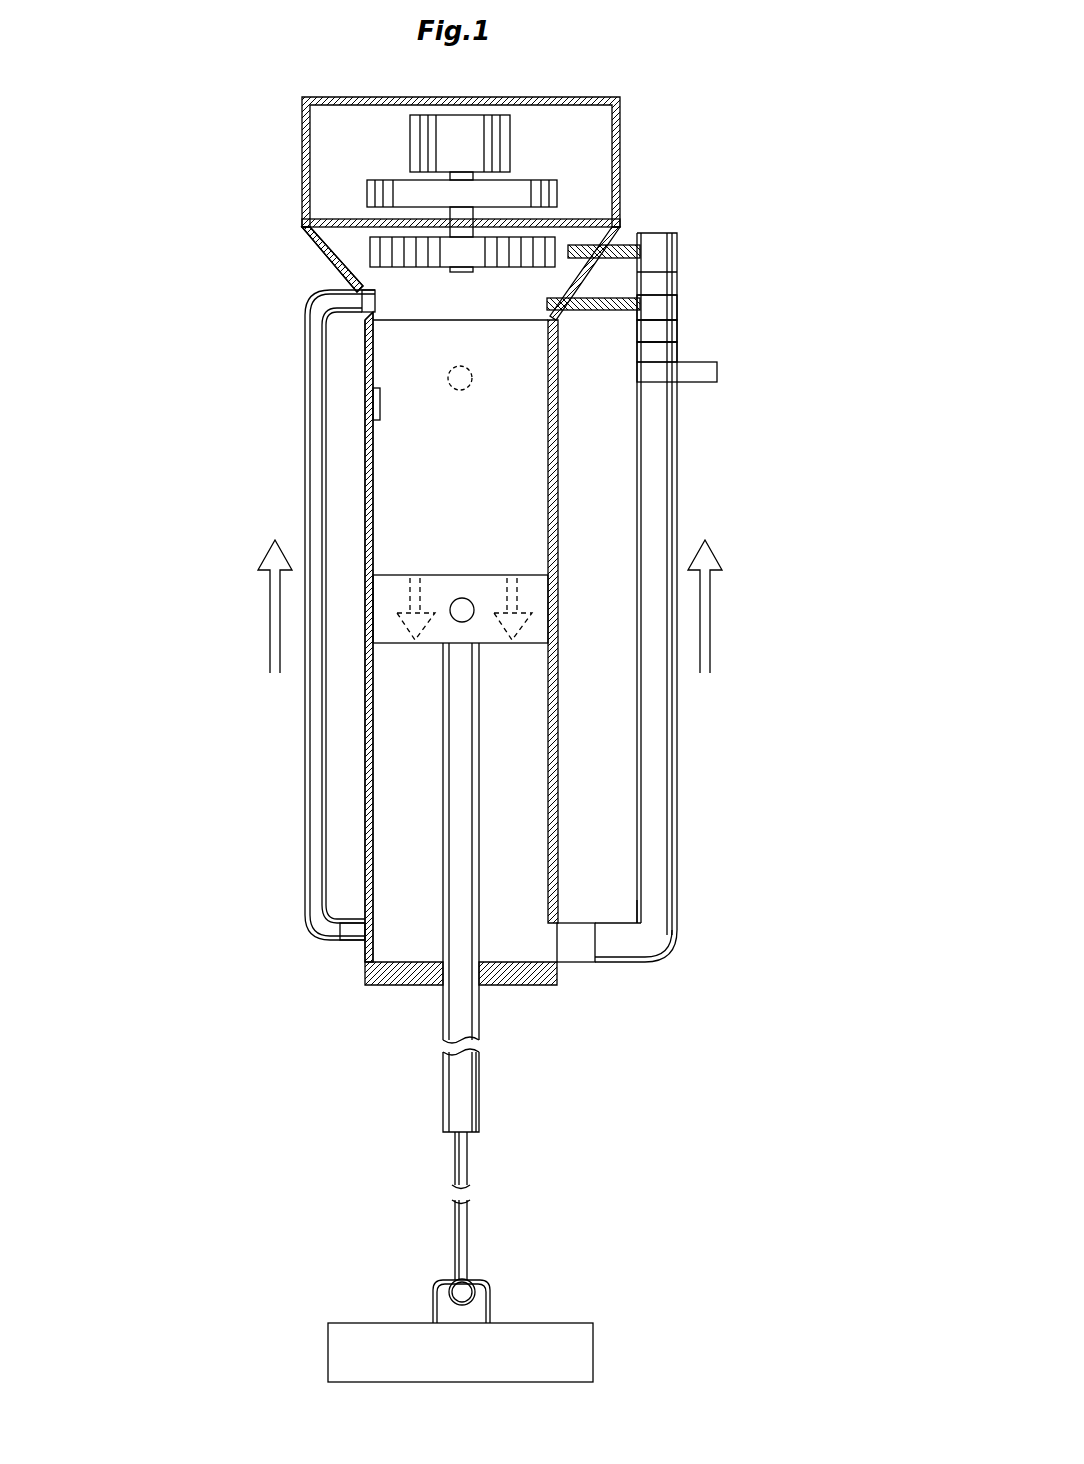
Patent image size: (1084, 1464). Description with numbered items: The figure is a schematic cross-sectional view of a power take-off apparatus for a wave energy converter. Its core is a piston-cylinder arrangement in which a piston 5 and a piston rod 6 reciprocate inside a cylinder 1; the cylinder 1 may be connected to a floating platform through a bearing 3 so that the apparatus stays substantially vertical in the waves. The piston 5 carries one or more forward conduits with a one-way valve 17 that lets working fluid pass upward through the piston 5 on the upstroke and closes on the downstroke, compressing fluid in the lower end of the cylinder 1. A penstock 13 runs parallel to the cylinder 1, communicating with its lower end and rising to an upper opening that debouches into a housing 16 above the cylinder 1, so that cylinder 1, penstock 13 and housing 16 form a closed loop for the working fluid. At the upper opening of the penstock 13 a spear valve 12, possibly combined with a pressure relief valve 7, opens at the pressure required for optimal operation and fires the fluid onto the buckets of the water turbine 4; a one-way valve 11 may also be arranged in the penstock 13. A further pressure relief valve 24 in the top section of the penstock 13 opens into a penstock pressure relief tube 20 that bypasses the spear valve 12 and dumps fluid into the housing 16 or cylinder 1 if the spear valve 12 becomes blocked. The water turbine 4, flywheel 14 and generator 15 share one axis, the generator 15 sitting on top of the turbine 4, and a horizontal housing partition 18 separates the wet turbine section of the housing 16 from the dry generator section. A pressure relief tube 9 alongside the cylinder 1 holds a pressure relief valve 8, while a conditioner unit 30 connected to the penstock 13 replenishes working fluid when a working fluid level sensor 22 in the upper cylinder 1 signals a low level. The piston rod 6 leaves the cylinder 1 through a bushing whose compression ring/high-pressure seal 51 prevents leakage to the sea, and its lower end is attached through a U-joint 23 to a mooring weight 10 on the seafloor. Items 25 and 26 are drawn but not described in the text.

The cylinder 1 is at (475, 495).
The bearing 3 is at (470, 378).
The water turbine 4 is at (548, 243).
The piston 5 is at (438, 580).
The piston rod 6 is at (460, 780).
The pressure relief valve 7 is at (658, 283).
The pressure relief valve 8 is at (350, 945).
The pressure relief tube 9 is at (305, 800).
The mooring weight 10 is at (372, 1338).
The one-way valve 11 is at (660, 352).
The spear valve 12 is at (615, 250).
The penstock 13 is at (655, 483).
The flywheel 14 is at (560, 150).
The generator 15 is at (450, 150).
The housing 16 is at (535, 170).
The one-way valve 17 is at (513, 628).
The horizontal housing partition 18 is at (343, 215).
The penstock pressure relief tube 20 is at (595, 308).
The working fluid level sensor 22 is at (383, 405).
The U-joint 23 is at (455, 1290).
The pressure relief valve 24 is at (660, 310).
The column segment 25 is at (660, 333).
The connector 26 is at (573, 940).
The conditioner unit 30 is at (705, 372).
The compression ring/high-pressure seal 51 is at (490, 990).